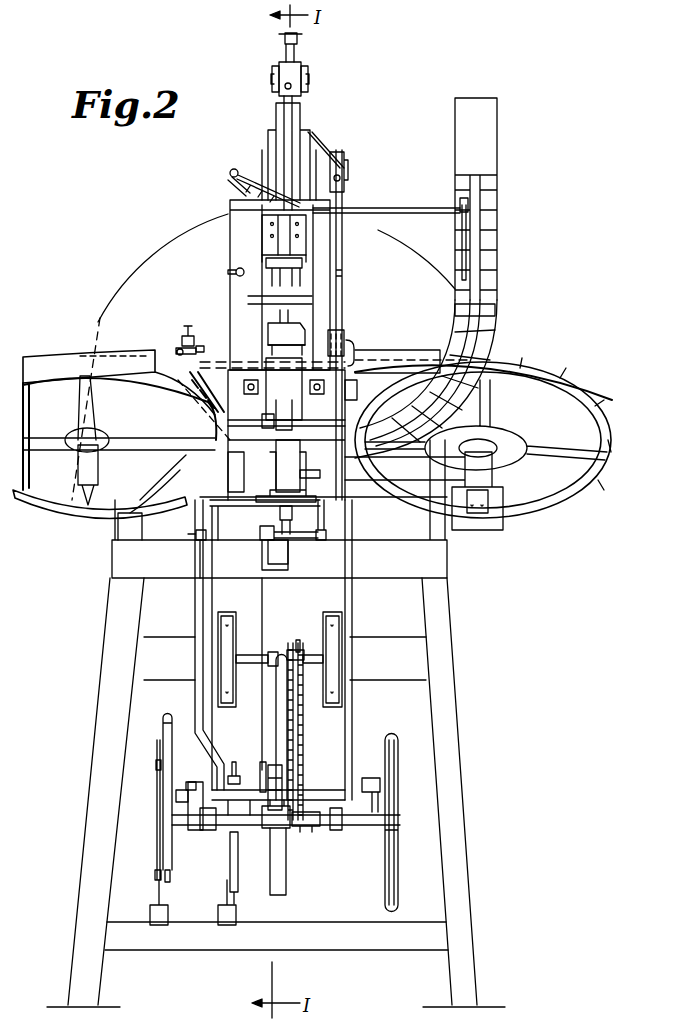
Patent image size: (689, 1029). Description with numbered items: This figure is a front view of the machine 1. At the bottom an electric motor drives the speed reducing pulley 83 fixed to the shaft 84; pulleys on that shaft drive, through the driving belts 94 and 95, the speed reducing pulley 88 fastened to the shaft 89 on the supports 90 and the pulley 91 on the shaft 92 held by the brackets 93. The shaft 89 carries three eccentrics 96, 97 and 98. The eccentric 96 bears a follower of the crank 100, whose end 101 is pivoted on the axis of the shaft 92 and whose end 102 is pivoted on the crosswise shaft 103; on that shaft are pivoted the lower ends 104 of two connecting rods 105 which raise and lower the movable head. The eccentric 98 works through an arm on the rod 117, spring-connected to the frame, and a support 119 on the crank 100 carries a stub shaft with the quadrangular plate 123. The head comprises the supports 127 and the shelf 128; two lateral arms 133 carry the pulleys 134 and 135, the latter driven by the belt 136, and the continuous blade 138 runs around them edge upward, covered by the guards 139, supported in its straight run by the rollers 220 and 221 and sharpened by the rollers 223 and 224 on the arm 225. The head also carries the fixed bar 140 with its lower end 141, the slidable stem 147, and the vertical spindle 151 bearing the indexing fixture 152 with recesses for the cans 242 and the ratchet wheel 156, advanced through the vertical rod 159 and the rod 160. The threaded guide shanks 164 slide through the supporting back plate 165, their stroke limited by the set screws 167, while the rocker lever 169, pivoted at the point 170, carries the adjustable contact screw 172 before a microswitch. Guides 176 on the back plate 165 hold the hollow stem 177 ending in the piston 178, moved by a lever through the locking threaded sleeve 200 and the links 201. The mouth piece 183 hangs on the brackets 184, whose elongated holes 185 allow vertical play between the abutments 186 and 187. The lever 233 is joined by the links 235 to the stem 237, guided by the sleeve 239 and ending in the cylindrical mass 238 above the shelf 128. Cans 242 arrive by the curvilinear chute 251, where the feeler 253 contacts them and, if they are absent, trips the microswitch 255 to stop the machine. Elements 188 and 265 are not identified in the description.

The frame leg 1 is at (92, 776).
The speed reducing pulley 83 is at (399, 858).
The shaft 84 is at (380, 786).
The speed reducing pulley 88 is at (164, 740).
The shaft 89 is at (180, 790).
The supports 90 is at (198, 780).
The pulley 91 is at (300, 648).
The shaft 92 is at (248, 655).
The brackets 93 is at (230, 612).
The driving belt 94 is at (294, 726).
The driving belt 95 is at (304, 742).
The eccentric 96 is at (287, 890).
The eccentric 97 is at (158, 778).
The eccentric 98 is at (234, 762).
The crank 100 is at (278, 703).
The end of crank 101 is at (274, 652).
The end of crank 102 is at (272, 830).
The crosswise arranged shaft 103 is at (318, 832).
The lower ends of connecting rods 104 is at (210, 834).
The connecting rods 105 is at (196, 698).
The rod 117 is at (195, 608).
The support 119 is at (268, 792).
The quadrangular plate 123 is at (262, 770).
The supports 127 is at (240, 474).
The shelf 128 is at (300, 458).
The lateral arms 133 is at (146, 478).
The pulley 134 is at (52, 502).
The pulley 135 is at (536, 498).
The belt 136 is at (505, 432).
The continuous blade 138 is at (378, 370).
The guards 139 is at (52, 354).
The fixed bar 140 is at (321, 540).
The lower end of fixed bar 141 is at (260, 534).
The stem 147 is at (292, 512).
The vertical spindle 151 is at (326, 478).
The indexing fixture 152 is at (268, 418).
The ratchet wheel 156 is at (272, 490).
The vertical rod 159 is at (219, 510).
The rod 160 is at (196, 540).
The threaded guide shanks 164 is at (262, 230).
The supporting back plate 165 is at (226, 272).
The set screws 167 is at (262, 250).
The rocker lever 169 is at (232, 182).
The pivot point 170 is at (266, 262).
The adjustable contact screw 172 is at (232, 170).
The guides 176 is at (340, 210).
The stem 177 is at (287, 111).
The piston 178 is at (268, 332).
The mouth piece 183 is at (284, 394).
The brackets 184 is at (250, 394).
The elongated holes 185 is at (318, 394).
The abutment 186 is at (232, 370).
The abutment 187 is at (272, 350).
The cap 188 is at (285, 41).
The locking threaded sleeve 200 is at (300, 66).
The links 201 is at (305, 78).
The roller 220 is at (200, 414).
The roller 221 is at (376, 362).
The roller 223 is at (176, 350).
The roller 224 is at (204, 348).
The arm 225 is at (196, 390).
The lever 233 is at (320, 150).
The links 235 is at (344, 160).
The stem 237 is at (343, 261).
The cylindrical mass 238 is at (362, 389).
The sleeve 239 is at (346, 340).
The cans 242 is at (272, 410).
The curvilinear chute 251 is at (497, 234).
The feeler 253 is at (462, 244).
The microswitch 255 is at (460, 210).
The block 265 is at (290, 560).